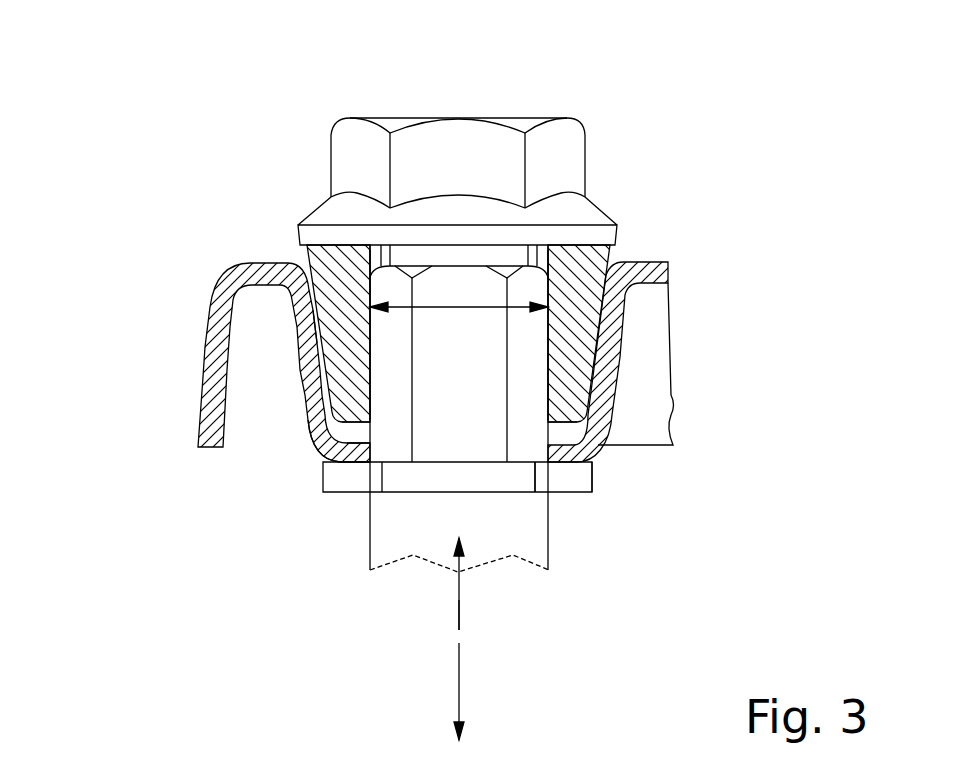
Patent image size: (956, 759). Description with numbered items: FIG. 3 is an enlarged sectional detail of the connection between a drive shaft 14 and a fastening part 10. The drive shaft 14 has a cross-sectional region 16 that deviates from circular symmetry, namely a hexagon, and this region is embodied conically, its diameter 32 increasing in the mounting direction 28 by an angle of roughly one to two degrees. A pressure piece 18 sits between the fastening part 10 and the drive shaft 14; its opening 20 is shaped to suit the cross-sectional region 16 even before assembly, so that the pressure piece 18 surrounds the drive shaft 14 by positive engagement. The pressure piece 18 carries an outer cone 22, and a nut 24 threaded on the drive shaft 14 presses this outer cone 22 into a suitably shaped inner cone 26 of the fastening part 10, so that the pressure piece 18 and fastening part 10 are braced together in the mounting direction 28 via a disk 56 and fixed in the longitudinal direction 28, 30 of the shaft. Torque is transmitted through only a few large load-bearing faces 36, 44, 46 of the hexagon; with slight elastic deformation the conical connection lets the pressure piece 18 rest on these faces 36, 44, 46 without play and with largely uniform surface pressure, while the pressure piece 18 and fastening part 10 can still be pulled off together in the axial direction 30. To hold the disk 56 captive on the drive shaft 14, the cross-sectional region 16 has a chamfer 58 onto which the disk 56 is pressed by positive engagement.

The fastening part 10 is at (686, 268).
The drive shaft 14 is at (353, 519).
The cross-sectional region 16 is at (310, 447).
The pressure piece 18 is at (590, 262).
The opening 20 is at (540, 371).
The outer cone 22 is at (322, 330).
The nut 24 is at (565, 160).
The inner cone 26 is at (325, 350).
The mounting direction 28 is at (460, 698).
The axial direction 30 is at (458, 617).
The diameter 32 is at (398, 304).
The load-bearing face 36 is at (390, 447).
The load-bearing face 44 is at (540, 424).
The load-bearing face 46 is at (350, 432).
The disk 56 is at (602, 479).
The chamfer 58 is at (548, 462).